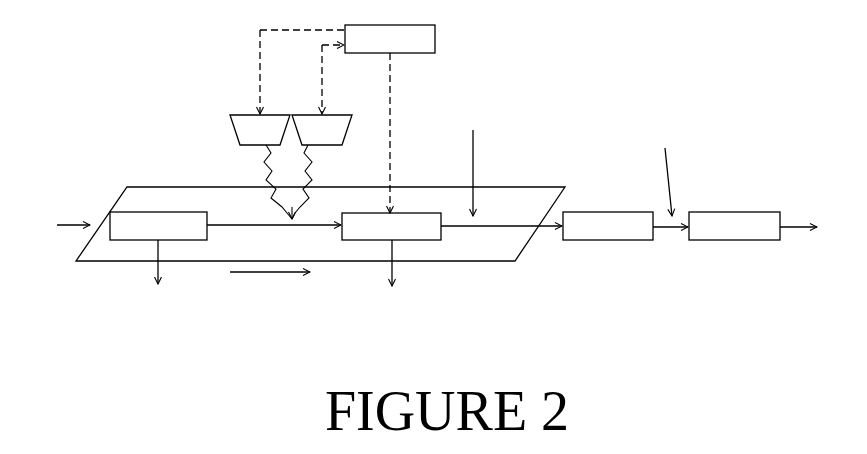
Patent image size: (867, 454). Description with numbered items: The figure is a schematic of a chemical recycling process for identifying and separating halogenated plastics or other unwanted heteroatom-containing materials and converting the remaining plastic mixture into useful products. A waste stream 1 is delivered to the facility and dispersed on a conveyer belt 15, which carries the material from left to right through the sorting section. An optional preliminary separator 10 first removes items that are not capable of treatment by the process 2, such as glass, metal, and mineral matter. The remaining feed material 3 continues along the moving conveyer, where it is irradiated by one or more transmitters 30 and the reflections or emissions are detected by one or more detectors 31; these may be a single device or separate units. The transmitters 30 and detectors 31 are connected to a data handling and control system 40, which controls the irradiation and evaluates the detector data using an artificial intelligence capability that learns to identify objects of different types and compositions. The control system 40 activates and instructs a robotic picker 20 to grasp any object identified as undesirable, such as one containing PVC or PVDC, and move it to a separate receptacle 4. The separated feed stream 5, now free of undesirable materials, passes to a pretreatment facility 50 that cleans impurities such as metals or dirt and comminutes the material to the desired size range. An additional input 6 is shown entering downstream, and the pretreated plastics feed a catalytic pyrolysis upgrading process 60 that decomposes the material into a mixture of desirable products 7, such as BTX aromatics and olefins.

The waste stream 1 is at (54, 224).
The items not capable of treatment 2 is at (158, 282).
The feed material 3 is at (227, 220).
The separate receptacle 4 is at (391, 283).
The separated feed stream 5 is at (474, 160).
The input stream to unit 60 6 is at (665, 166).
The desirable products 7 is at (818, 227).
The preliminary separator 10 is at (158, 226).
The conveyer belt 15 is at (270, 283).
The robotic picker 20 is at (391, 226).
The transmitter 30 is at (287, 124).
The detector 31 is at (322, 132).
The data handling and control system 40 is at (390, 119).
The pretreatment facility 50 is at (608, 226).
The catalytic pyrolysis upgrading process 60 is at (734, 226).